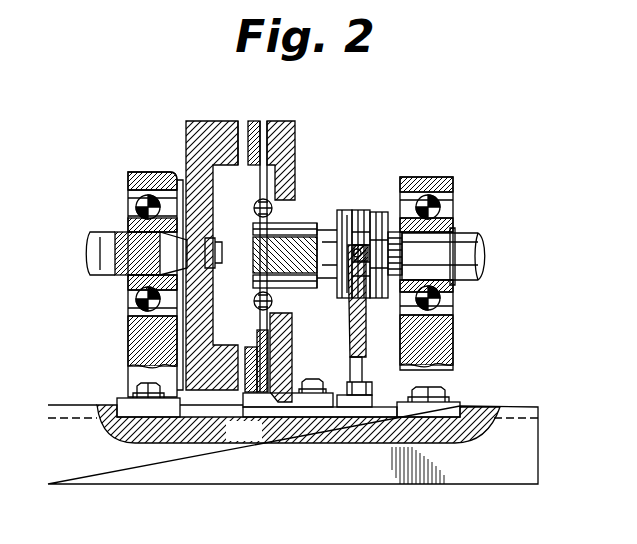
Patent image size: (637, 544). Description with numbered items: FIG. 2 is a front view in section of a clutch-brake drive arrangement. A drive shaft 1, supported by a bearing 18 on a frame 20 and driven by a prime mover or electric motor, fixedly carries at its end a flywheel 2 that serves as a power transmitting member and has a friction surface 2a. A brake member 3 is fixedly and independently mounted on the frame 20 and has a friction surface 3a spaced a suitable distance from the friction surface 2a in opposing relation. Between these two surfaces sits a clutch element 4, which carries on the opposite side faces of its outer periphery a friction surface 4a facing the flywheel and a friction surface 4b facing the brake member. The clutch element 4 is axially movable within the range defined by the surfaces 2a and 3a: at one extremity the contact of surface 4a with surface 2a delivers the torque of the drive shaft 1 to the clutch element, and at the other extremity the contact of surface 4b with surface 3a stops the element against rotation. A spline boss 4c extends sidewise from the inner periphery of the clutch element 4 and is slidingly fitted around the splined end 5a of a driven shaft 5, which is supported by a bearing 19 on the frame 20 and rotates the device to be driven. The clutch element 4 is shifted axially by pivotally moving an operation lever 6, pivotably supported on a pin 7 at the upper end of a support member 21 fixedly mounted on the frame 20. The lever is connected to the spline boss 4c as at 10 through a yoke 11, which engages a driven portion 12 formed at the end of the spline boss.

The drive shaft 1 is at (112, 276).
The flywheel 2 is at (207, 125).
The friction surface 2a is at (242, 125).
The brake member 3 is at (295, 141).
The friction surface 3a is at (283, 124).
The clutch element 4 is at (263, 121).
The friction surface 4a is at (298, 425).
The friction surface 4b is at (301, 337).
The spline boss 4c is at (273, 298).
The driven shaft 5 is at (466, 281).
The splined end 5a is at (306, 232).
The operation lever 6 is at (393, 257).
The pin 7 is at (341, 256).
The connection 10 is at (358, 214).
The yoke 11 is at (378, 216).
The driven portion 12 is at (364, 298).
The bearing 18 is at (128, 196).
The bearing 19 is at (445, 216).
The frame 20 is at (522, 412).
The support member 21 is at (349, 367).